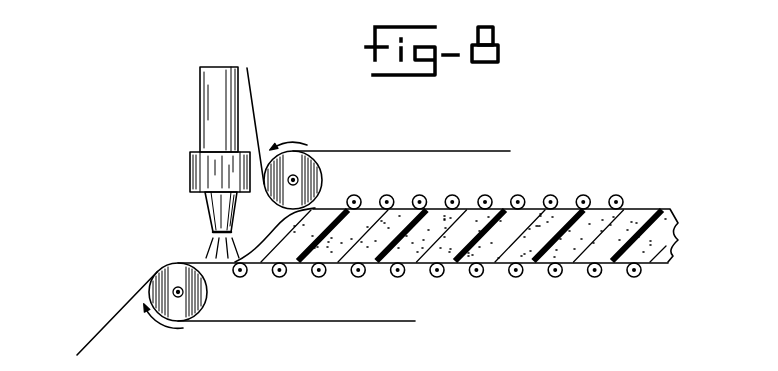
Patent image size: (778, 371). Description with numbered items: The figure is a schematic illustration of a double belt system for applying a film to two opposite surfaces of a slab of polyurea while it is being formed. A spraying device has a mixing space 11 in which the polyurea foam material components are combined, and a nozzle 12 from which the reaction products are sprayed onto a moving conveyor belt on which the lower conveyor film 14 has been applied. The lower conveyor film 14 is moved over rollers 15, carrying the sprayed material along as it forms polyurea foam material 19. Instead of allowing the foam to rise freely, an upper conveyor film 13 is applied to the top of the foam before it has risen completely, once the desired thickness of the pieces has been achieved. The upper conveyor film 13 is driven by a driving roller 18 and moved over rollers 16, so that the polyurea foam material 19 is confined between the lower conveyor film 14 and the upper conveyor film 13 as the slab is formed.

The mixing space 11 is at (207, 90).
The nozzle 12 is at (212, 215).
The upper conveyor film 13 is at (648, 208).
The lower conveyor film 14 is at (658, 262).
The rollers 15 is at (477, 277).
The rollers 16 is at (421, 198).
The driving roller 18 is at (313, 177).
The polyurea foam material 19 is at (562, 222).